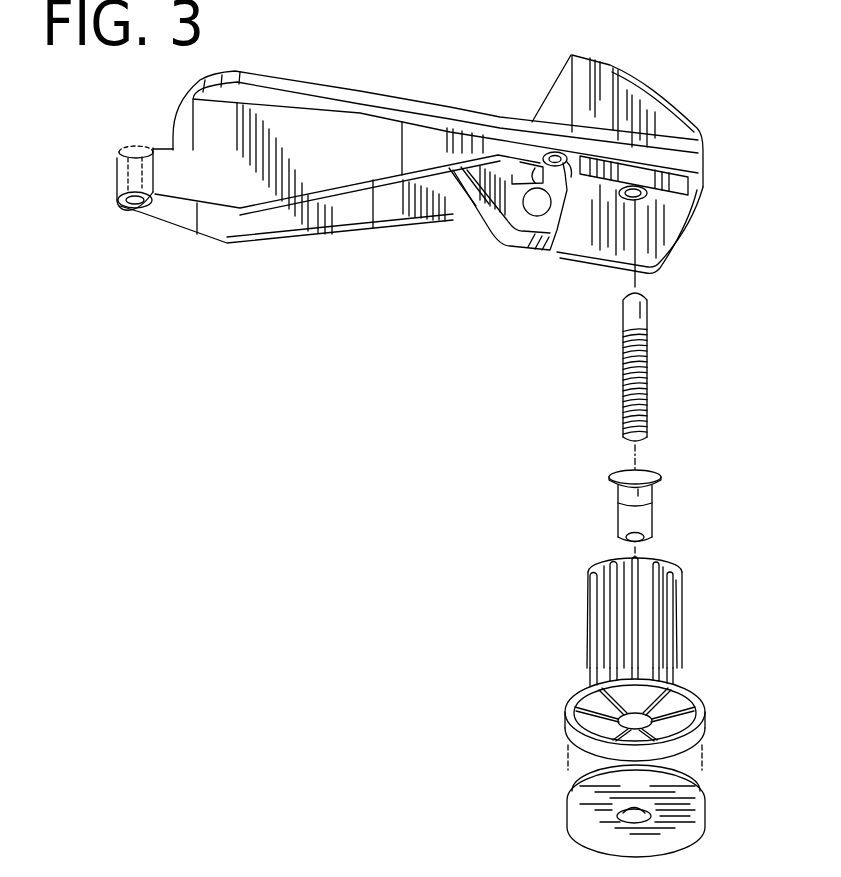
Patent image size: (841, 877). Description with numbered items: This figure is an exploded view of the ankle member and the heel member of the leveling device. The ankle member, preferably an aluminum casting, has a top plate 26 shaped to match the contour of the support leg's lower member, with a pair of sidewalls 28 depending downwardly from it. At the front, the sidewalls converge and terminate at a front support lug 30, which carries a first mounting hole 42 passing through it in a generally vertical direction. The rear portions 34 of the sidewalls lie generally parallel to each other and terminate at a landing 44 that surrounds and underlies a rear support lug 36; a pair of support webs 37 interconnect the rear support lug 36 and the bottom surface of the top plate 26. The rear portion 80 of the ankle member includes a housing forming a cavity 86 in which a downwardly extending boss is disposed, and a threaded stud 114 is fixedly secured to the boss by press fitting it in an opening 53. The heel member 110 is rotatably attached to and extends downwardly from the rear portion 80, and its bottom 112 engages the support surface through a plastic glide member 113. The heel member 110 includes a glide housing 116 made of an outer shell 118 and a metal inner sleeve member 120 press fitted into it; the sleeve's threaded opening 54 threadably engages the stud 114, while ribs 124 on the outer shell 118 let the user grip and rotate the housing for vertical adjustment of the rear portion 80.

The top plate 26 is at (302, 83).
The sidewalls 28 is at (330, 207).
The front support lug 30 is at (153, 170).
The rear portions of the sidewalls 34 is at (416, 140).
The rear support lug 36 is at (552, 222).
The support webs 37 is at (496, 181).
The first mounting hole 42 is at (133, 205).
The landing 44 is at (525, 178).
The opening 53 is at (642, 198).
The threaded opening 54 is at (640, 542).
The rear portion 80 is at (677, 100).
The cavity 86 is at (653, 243).
The heel member 110 is at (580, 592).
The bottom 112 is at (565, 722).
The glide member 113 is at (588, 808).
The threaded stud 114 is at (622, 353).
The glide housing 116 is at (684, 590).
The outer shell 118 is at (668, 636).
The inner sleeve member 120 is at (650, 515).
The ribs 124 is at (622, 625).